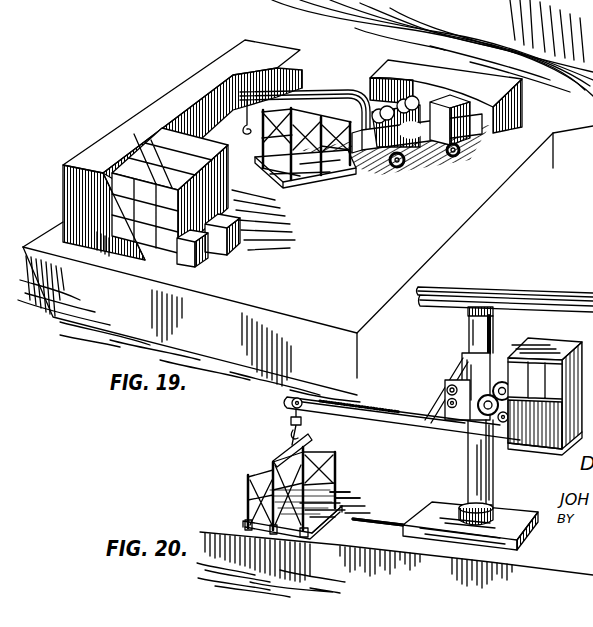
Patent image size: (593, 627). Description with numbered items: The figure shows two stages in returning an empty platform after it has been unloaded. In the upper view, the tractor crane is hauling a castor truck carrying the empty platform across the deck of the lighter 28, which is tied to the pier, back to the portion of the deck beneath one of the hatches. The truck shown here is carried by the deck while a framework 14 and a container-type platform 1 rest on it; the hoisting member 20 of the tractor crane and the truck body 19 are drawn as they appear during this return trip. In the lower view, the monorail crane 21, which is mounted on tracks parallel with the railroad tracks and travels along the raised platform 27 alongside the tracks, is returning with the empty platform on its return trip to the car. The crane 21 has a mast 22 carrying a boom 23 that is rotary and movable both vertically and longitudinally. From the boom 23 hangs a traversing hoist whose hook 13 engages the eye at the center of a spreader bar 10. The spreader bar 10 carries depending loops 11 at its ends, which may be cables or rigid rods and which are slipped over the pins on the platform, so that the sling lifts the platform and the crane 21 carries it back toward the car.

In FIG. 19, the lighter 28 is at (192, 90).
In FIG. 19, the boom pipe 20 is at (315, 98).
In FIG. 19, the truck 19 is at (395, 135).
In FIG. 19, the base platform 14 is at (277, 178).
In FIG. 19, the container frame 1 is at (305, 162).
In FIG. 20, the container frame 1 is at (326, 511).
In FIG. 20, the hook 13 is at (292, 428).
In FIG. 20, the spreader bar 10 is at (283, 454).
In FIG. 20, the depending loops 11 is at (248, 502).
In FIG. 20, the boom 23 is at (372, 420).
In FIG. 20, the raised platform 27 is at (366, 505).
In FIG. 20, the mast 22 is at (488, 486).
In FIG. 20, the monorail crane 21 is at (523, 511).